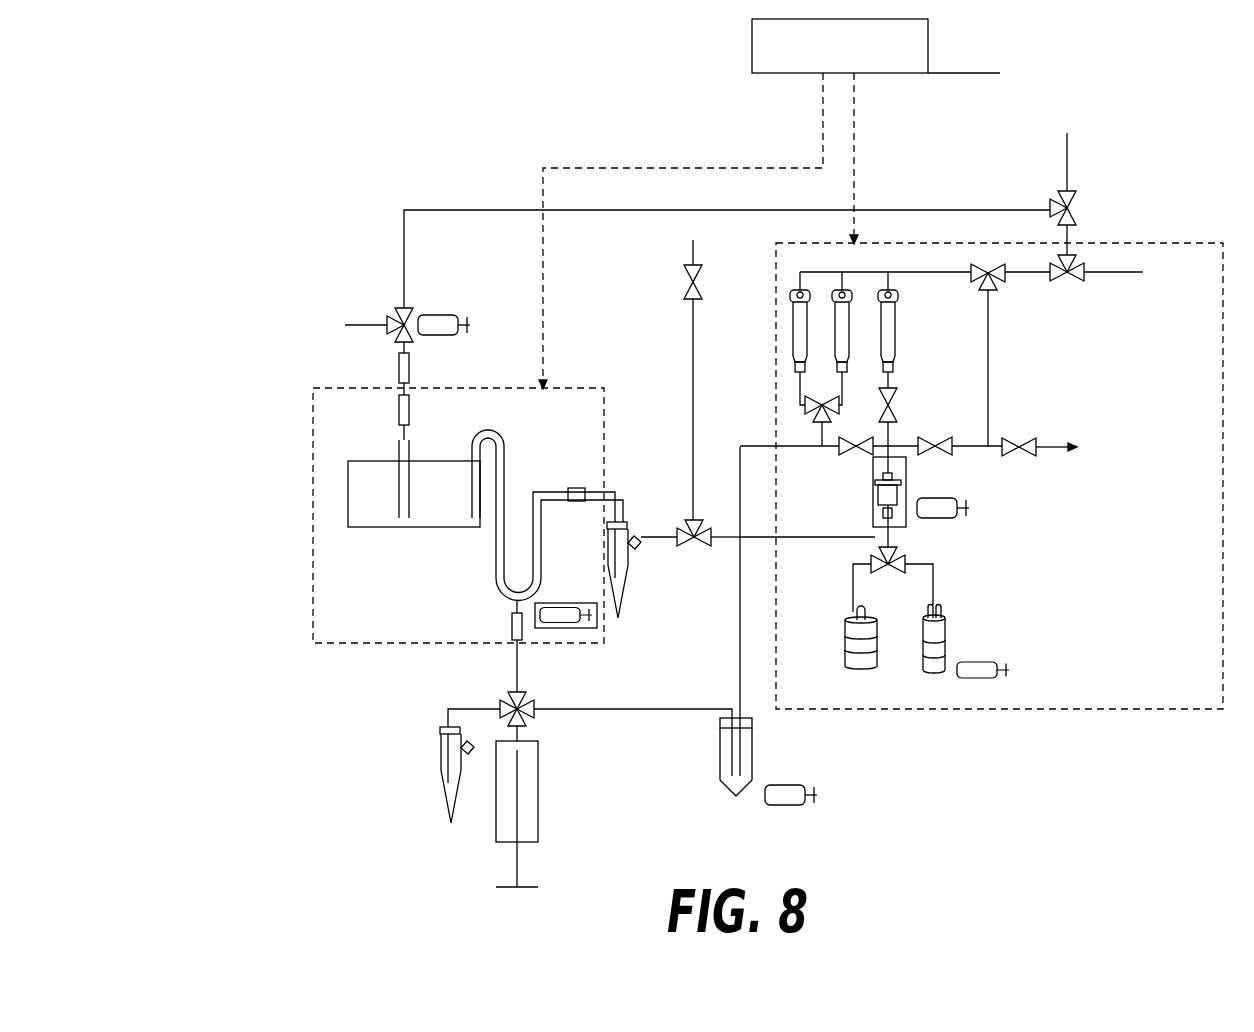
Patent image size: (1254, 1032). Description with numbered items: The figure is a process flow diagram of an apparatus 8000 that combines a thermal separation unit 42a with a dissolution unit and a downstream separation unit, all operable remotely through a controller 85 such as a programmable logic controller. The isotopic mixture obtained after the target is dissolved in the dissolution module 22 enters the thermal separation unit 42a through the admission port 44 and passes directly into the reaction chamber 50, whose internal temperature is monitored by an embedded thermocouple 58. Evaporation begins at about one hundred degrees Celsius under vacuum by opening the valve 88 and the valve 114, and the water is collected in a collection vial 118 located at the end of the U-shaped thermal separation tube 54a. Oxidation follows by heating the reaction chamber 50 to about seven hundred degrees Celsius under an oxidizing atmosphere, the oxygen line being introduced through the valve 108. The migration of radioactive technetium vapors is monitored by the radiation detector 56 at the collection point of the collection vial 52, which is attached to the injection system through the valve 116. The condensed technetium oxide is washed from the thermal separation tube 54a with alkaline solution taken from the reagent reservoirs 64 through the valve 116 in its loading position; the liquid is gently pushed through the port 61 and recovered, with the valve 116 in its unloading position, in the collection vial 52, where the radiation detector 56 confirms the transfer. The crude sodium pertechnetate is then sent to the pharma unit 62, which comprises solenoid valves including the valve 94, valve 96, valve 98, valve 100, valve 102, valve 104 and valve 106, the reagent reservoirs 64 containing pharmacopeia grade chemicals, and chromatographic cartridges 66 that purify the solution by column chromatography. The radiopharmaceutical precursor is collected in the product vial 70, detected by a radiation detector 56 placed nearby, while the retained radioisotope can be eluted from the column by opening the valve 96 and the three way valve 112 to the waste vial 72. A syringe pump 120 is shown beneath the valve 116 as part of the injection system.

The apparatus 8000 is at (322, 150).
The controller 85 is at (928, 42).
The dissolution module 22 is at (341, 337).
The radiation detector 56 is at (470, 322).
The thermal separation unit 42a is at (310, 524).
The admission port 44 is at (412, 452).
The thermocouple 58 is at (383, 513).
The reaction chamber 50 is at (448, 462).
The thermal separation tube 54a is at (505, 445).
The port 61 is at (510, 625).
The collection vial 118 is at (630, 580).
The valve 114 is at (702, 545).
The valve 88 is at (690, 280).
The pharma unit 62 is at (1153, 700).
The valve 108 is at (1072, 205).
The solenoid valve 106 is at (1070, 278).
The solenoid valve 104 is at (985, 268).
The reagent reservoirs 64 is at (802, 345).
The solenoid valve 94 is at (812, 402).
The valve 96 is at (895, 415).
The solenoid valve 98 is at (852, 452).
The solenoid valve 100 is at (938, 452).
The solenoid valve 102 is at (1016, 452).
The chromatographic cartridges 66 is at (895, 495).
The three way valve 112 is at (890, 575).
The waste vial 72 is at (845, 644).
The product vial 70 is at (947, 640).
The valve 116 is at (528, 702).
The syringe pump 120 is at (540, 790).
The collection vial 52 is at (734, 797).